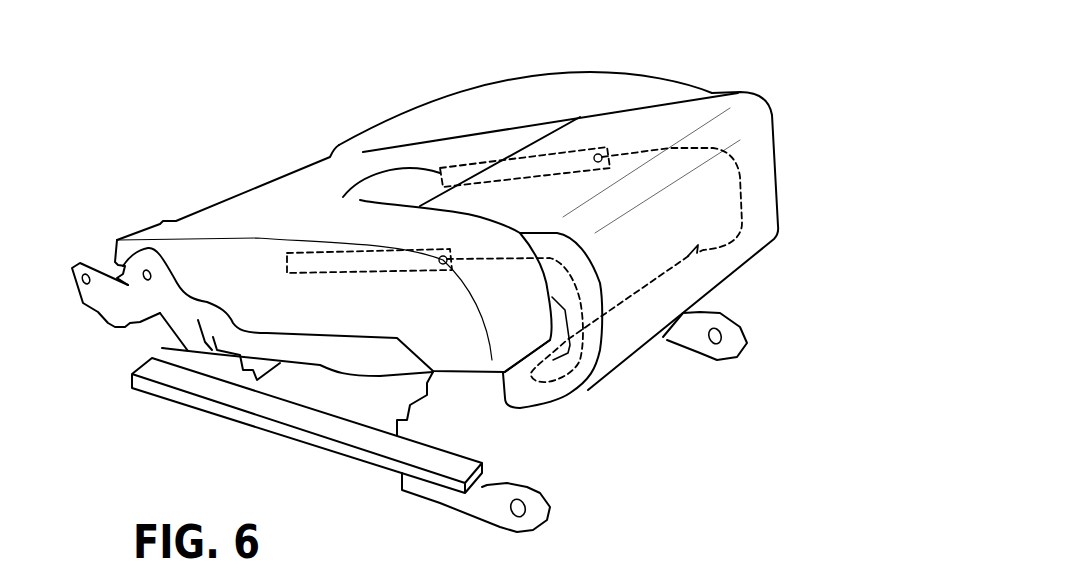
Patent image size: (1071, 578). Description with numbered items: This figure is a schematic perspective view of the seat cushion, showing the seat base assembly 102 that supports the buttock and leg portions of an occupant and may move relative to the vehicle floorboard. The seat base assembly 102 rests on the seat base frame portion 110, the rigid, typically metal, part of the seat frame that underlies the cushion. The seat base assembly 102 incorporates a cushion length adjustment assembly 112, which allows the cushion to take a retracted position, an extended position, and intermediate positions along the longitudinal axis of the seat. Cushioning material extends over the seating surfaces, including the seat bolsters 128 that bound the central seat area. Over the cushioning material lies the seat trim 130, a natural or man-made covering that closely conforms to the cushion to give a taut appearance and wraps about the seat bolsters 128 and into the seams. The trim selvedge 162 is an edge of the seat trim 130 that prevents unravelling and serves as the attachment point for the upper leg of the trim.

The seat base assembly 102 is at (622, 123).
The seat base frame portion 110 is at (210, 392).
The cushion length adjustment assembly 112 is at (788, 148).
The seat bolsters 128 is at (258, 250).
The seat trim 130 is at (510, 93).
The trim selvedge 162 is at (327, 252).